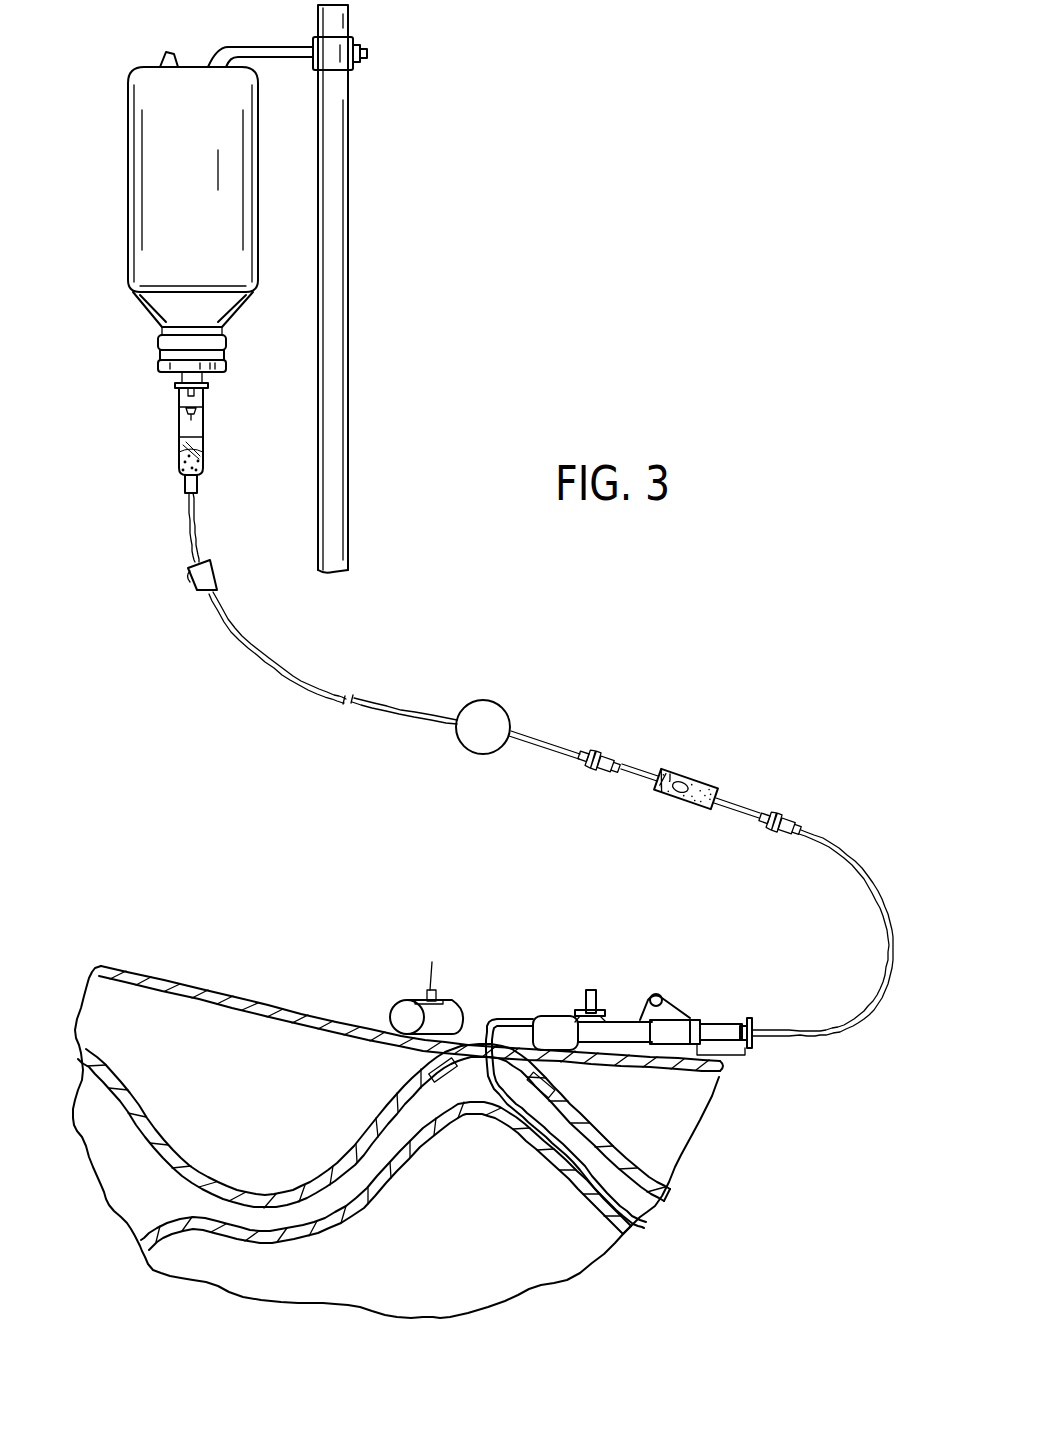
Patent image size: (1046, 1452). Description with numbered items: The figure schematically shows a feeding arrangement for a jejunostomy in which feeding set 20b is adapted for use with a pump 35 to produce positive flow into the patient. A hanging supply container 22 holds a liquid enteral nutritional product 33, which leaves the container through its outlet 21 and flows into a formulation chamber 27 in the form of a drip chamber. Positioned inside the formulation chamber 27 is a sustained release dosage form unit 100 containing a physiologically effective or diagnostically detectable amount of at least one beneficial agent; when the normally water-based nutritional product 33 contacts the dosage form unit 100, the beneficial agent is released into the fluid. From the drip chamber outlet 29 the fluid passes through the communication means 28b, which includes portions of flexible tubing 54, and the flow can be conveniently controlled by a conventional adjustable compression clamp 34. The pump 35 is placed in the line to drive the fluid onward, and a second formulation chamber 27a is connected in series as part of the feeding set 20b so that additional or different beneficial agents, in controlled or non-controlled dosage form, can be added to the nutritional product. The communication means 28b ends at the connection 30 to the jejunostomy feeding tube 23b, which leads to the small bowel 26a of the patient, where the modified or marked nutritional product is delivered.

The supply container 22 is at (178, 125).
The liquid enteral nutritional product 33 is at (165, 176).
The outlet 21 is at (225, 362).
The formulation chamber 27 is at (214, 427).
The sustained release dosage form unit 100 is at (180, 463).
The drip chamber outlet 29 is at (183, 487).
The adjustable compression clamp 34 is at (213, 568).
The feeding set 20b is at (215, 656).
The communication means 28b is at (298, 630).
The flexible tubing 54 is at (263, 662).
The pump 35 is at (480, 699).
The second formulation chamber 27a is at (692, 775).
The jejunostomy feeding tube 23b is at (626, 1017).
The connection 30 is at (744, 1026).
The small bowel 26a is at (572, 1190).